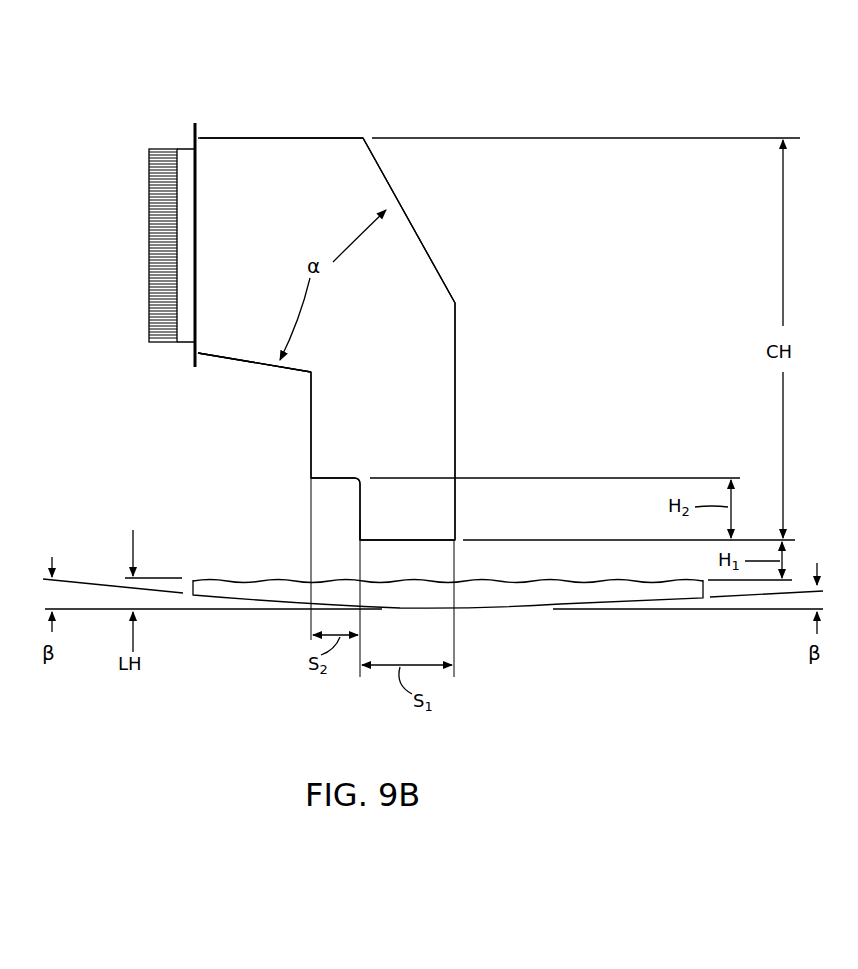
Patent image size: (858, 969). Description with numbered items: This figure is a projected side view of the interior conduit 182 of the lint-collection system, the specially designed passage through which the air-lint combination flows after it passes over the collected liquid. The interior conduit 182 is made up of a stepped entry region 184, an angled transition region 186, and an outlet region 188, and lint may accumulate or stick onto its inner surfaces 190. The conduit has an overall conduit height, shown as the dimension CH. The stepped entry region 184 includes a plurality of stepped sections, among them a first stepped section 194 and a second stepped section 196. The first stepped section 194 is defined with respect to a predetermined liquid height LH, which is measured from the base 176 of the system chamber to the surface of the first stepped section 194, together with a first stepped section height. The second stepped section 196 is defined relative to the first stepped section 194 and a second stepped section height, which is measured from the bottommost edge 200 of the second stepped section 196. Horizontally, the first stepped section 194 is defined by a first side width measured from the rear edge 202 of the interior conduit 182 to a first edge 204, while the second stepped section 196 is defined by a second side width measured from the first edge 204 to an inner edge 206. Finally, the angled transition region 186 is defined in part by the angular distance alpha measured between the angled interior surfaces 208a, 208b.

The interior conduit 182 is at (457, 85).
The outlet region 188 is at (172, 146).
The inner surfaces 190 is at (370, 158).
The angled interior surface 208a is at (424, 260).
The rear edge 202 is at (461, 345).
The second stepped section 196 is at (345, 476).
The first stepped section 194 is at (422, 537).
The angled transition region 186 is at (221, 366).
The angled interior surface 208b is at (259, 357).
The inner edge 206 is at (309, 431).
The bottommost edge 200 is at (325, 484).
The stepped entry region 184 is at (340, 503).
The first edge 204 is at (356, 536).
The base 176 is at (225, 600).